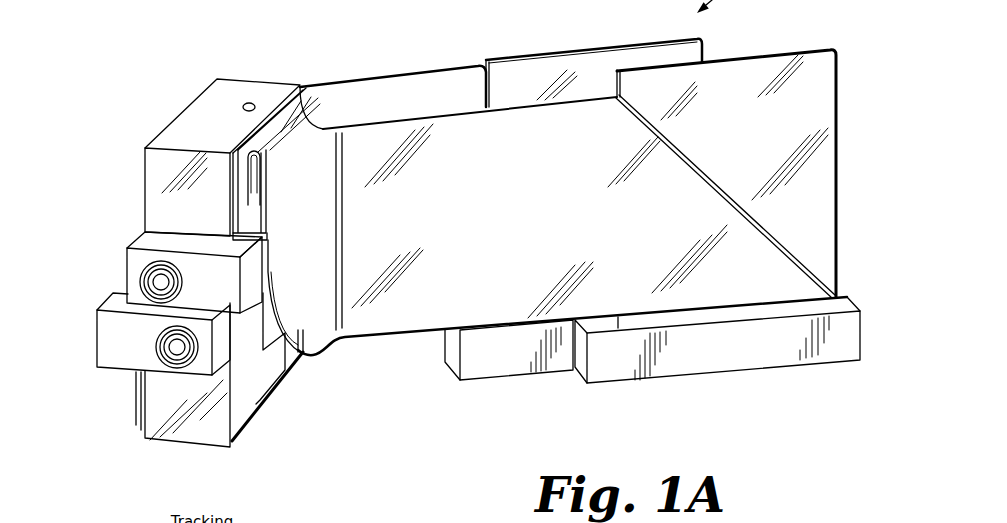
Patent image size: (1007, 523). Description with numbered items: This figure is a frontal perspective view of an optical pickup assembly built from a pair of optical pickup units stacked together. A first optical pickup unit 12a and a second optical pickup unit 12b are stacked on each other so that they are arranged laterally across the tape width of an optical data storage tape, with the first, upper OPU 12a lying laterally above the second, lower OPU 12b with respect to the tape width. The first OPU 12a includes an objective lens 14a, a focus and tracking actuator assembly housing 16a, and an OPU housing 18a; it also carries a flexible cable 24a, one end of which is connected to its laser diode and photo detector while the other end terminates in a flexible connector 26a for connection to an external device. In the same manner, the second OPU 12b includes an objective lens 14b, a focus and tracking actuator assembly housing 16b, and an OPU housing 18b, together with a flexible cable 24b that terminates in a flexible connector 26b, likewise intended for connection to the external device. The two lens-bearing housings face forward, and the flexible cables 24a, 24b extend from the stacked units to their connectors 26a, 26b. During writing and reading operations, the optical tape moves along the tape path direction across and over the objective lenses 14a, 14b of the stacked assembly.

The first optical pickup unit 12a is at (128, 165).
The second optical pickup unit 12b is at (280, 430).
The objective lens 14a is at (152, 289).
The objective lens 14b is at (170, 356).
The focus and tracking actuator assembly housing 16a is at (136, 233).
The focus and tracking actuator assembly housing 16b is at (104, 372).
The OPU housing 18a is at (188, 106).
The OPU housing 18b is at (143, 434).
The flexible cable 24a is at (390, 338).
The flexible cable 24b is at (377, 74).
The flexible connector 26a is at (723, 376).
The flexible connector 26b is at (507, 378).